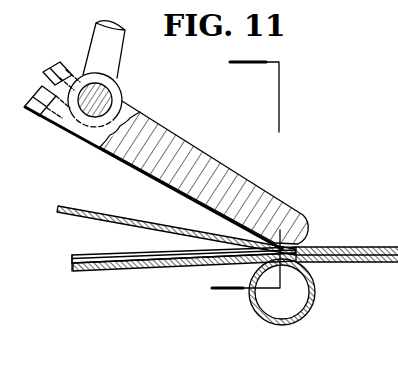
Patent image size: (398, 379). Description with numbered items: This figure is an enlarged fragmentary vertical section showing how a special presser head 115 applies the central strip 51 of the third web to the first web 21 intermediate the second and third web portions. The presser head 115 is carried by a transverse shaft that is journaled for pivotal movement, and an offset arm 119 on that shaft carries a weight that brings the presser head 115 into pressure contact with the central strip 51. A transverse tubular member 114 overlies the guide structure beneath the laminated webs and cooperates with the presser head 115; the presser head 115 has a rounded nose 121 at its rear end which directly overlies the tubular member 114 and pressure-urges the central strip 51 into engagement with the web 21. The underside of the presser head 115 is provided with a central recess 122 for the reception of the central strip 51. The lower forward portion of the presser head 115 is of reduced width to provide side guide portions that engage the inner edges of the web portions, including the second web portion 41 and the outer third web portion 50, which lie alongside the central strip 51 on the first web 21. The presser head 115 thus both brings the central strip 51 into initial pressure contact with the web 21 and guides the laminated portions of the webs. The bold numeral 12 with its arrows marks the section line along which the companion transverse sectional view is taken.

The section line 12- 12 is at (240, 189).
The first web 21 is at (147, 268).
The second web portion 41 is at (72, 265).
The outer third web portion 50 is at (82, 254).
The central strip 51 is at (88, 208).
The transverse tubular member 114 is at (288, 324).
The presser head 115 is at (85, 135).
The offset arm 119 is at (114, 68).
The rounded nose 121 is at (314, 233).
The central recess 122 is at (185, 200).